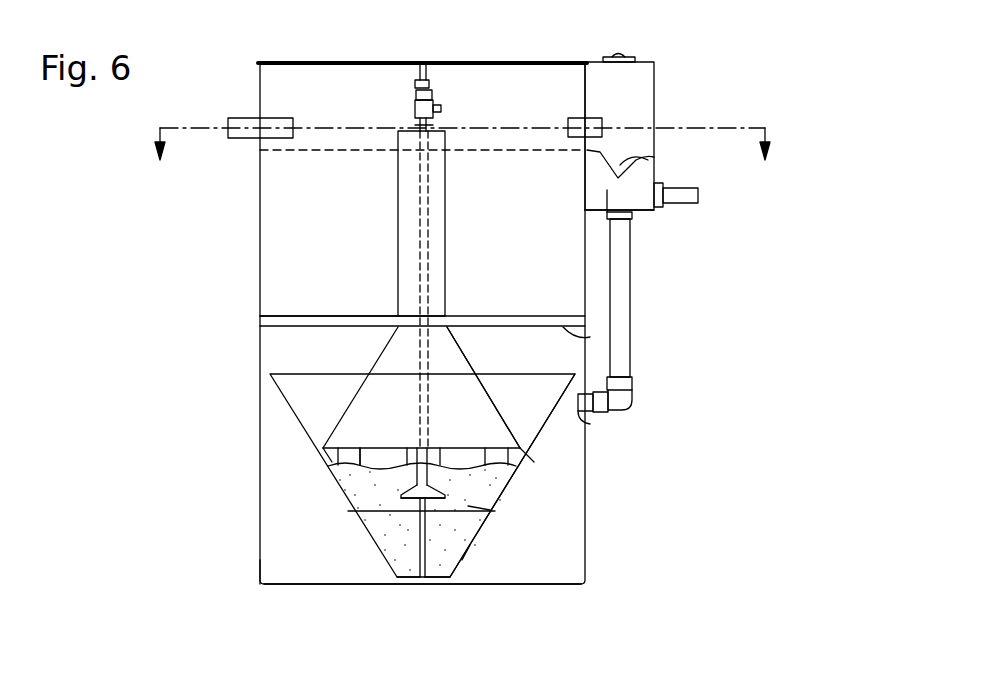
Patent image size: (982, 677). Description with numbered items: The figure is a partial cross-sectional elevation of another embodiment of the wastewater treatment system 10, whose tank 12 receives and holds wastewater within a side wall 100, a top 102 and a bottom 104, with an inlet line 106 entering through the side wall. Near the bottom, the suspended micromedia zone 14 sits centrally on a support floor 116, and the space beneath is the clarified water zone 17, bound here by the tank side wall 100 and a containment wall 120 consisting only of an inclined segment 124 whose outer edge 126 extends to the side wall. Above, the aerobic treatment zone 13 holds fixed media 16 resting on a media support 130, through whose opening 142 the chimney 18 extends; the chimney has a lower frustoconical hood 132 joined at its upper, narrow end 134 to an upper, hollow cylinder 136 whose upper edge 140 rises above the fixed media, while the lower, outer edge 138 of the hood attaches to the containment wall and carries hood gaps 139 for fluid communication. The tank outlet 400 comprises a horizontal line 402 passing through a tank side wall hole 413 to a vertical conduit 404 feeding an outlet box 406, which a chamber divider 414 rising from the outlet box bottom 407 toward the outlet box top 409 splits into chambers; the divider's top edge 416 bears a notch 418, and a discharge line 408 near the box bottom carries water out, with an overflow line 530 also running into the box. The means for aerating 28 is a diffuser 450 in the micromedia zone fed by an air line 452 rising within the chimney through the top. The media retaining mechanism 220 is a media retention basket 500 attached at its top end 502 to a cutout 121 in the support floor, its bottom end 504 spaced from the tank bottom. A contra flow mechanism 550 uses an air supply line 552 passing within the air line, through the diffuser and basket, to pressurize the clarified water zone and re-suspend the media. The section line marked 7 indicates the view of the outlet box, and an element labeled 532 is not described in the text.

The wastewater treatment system 10 is at (248, 58).
The tank 12 is at (705, 52).
The aerobic treatment zone 13 is at (250, 152).
The suspended micromedia zone 14 is at (500, 478).
The fixed media 16 is at (260, 318).
The clarified water zone 17 is at (515, 572).
The chimney 18 is at (447, 188).
The means for aerating 28 is at (458, 493).
The side wall 100 is at (260, 428).
The top 102 is at (440, 62).
The bottom 104 is at (550, 586).
The inlet line 106 is at (245, 118).
The support floor 116 is at (492, 510).
The containment wall 120 is at (325, 448).
The cutout 121 is at (492, 500).
The inclined segment 124 is at (332, 462).
The outer edge 126 is at (268, 374).
The media support 130 is at (590, 337).
The hood 132 is at (503, 413).
The upper, narrow end 134 is at (397, 328).
The upper, hollow cylinder 136 is at (262, 317).
The lower, outer edge 138 is at (534, 462).
The hood gaps 139 is at (385, 454).
The upper edge 140 is at (436, 128).
The opening 142 is at (447, 324).
The media retaining mechanism 220 is at (260, 578).
The tank outlet 400 is at (740, 400).
The horizontal line 402 is at (596, 415).
The vertical conduit 404 is at (630, 332).
The outlet box 406 is at (655, 115).
The outlet box bottom 407 is at (640, 212).
The discharge line 408 is at (677, 208).
The outlet box top 409 is at (590, 62).
The tank side wall hole 413 is at (590, 424).
The chamber divider 414 is at (607, 192).
The top edge 416 is at (600, 150).
The notch 418 is at (625, 163).
The diffuser 450 is at (412, 556).
The air line 452 is at (402, 497).
The media retention basket 500 is at (468, 553).
The top end 502 is at (468, 506).
The bottom end 504 is at (437, 578).
The overflow line 530 is at (580, 117).
The valve 532 is at (415, 84).
The contra flow mechanism 550 is at (421, 589).
The air supply line 552 is at (402, 578).
The section line 7- 7 is at (460, 164).